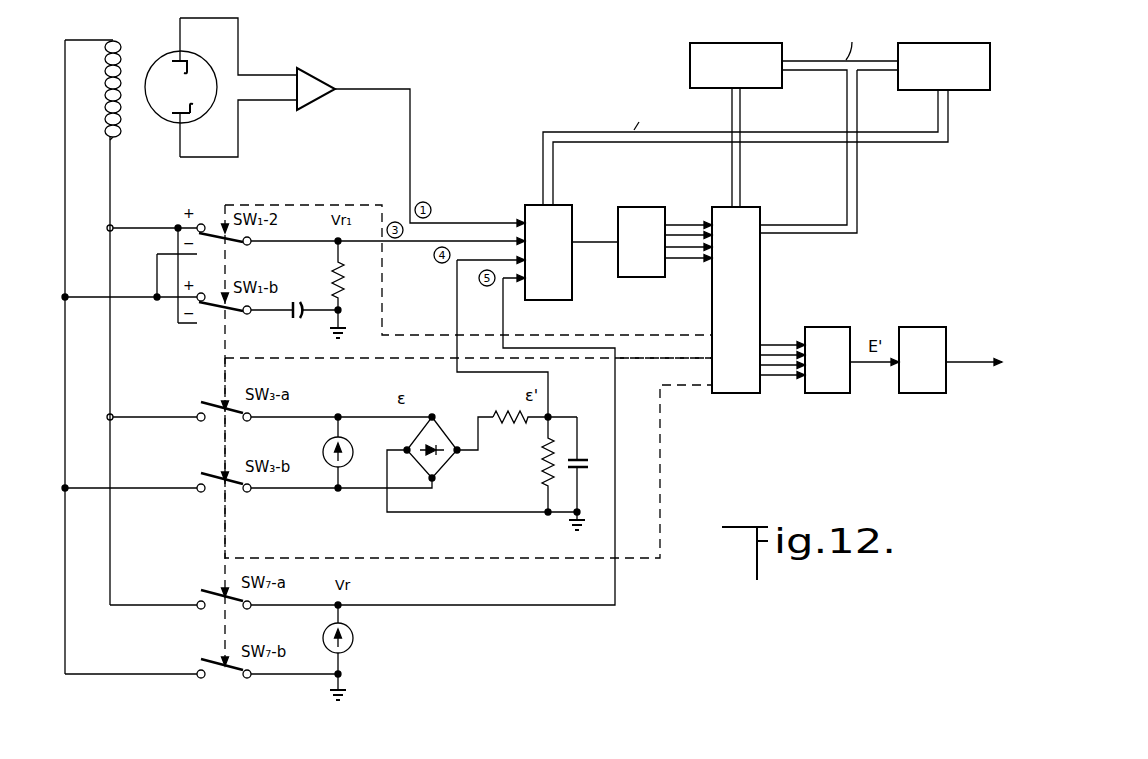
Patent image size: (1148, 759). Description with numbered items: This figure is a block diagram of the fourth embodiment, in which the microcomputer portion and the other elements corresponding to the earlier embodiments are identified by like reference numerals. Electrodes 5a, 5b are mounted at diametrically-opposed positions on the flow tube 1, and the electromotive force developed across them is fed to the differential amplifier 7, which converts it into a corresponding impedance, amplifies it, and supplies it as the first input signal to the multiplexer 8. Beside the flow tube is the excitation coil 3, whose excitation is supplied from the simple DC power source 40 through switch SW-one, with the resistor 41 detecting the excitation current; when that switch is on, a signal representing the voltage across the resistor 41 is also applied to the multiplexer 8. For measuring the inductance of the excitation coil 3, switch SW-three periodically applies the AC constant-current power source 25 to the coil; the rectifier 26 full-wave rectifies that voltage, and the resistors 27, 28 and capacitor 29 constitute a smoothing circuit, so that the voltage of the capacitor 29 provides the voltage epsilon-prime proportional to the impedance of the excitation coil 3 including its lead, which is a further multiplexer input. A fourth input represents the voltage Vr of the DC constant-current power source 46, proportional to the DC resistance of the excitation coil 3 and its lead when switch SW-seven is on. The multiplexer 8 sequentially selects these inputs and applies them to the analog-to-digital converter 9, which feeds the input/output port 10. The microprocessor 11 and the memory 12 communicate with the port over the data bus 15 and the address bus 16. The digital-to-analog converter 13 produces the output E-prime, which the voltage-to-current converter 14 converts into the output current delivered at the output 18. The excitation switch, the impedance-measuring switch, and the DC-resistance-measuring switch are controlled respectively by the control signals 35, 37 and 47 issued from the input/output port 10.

The flow tube 1 is at (160, 121).
The excitation coil 3 is at (121, 45).
The electrode 5a is at (171, 74).
The electrode 5b is at (187, 100).
The differential amplifier 7 is at (323, 77).
The multiplexer 8 is at (532, 203).
The analog-to-digital converter 9 is at (648, 206).
The input/output port 10 is at (755, 211).
The microprocessor 11 is at (715, 42).
The memory 12 is at (948, 42).
The digital-to-analog converter 13 is at (833, 326).
The voltage-to-current converter 14 is at (913, 394).
The data bus 15 is at (846, 100).
The address bus 16 is at (548, 130).
The output 18 is at (968, 362).
The AC constant-current power source 25 is at (353, 452).
The rectifier 26 is at (442, 432).
The resistor 27 is at (522, 428).
The resistor 28 is at (540, 470).
The capacitor 29 is at (588, 458).
The control signal 35 is at (662, 333).
The control signal 37 is at (648, 362).
The DC power source 40 is at (296, 319).
The resistor 41 is at (332, 273).
The DC constant-current power source 46 is at (355, 643).
The control signal 47 is at (662, 472).